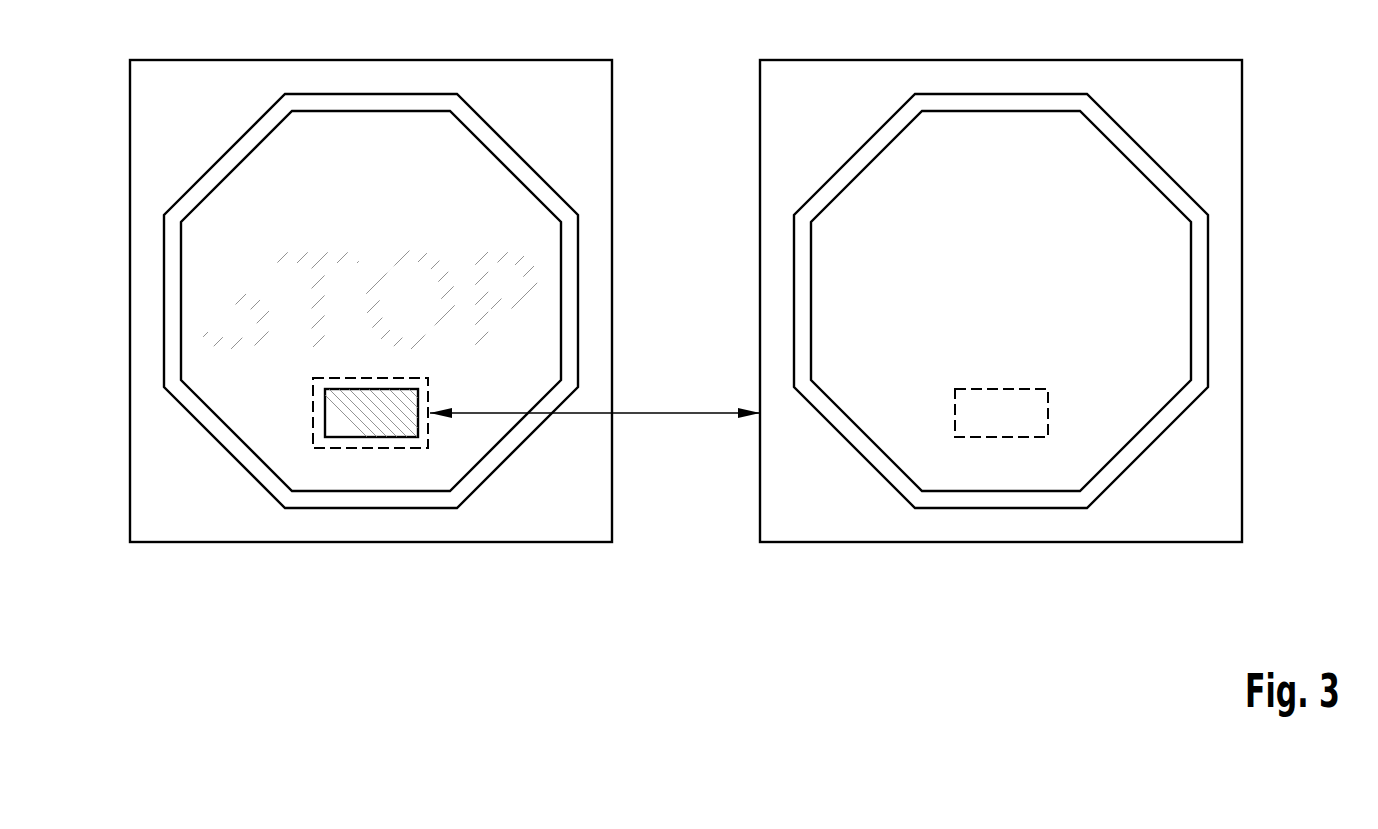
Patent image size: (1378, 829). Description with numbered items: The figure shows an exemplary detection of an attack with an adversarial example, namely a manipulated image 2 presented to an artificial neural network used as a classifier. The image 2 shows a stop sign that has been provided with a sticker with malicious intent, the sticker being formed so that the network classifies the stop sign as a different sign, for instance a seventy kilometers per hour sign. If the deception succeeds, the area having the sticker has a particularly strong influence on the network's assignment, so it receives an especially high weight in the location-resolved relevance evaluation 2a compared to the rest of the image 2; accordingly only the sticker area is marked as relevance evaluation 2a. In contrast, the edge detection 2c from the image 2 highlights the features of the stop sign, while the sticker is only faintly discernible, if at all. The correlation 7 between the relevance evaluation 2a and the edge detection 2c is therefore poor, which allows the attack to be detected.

The image 2 is at (566, 60).
The edge detection 2c is at (1194, 60).
The location-resolved relevance evaluation 2a is at (330, 448).
The correlation 7 is at (683, 415).